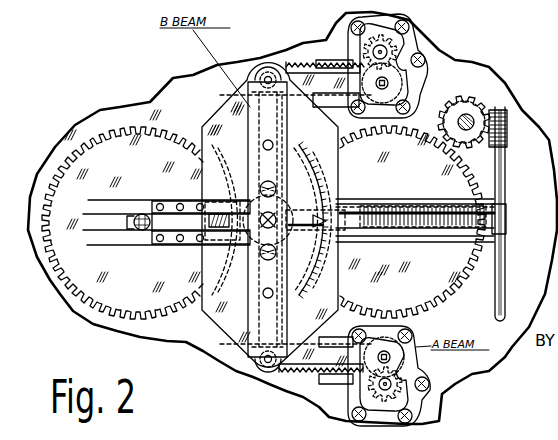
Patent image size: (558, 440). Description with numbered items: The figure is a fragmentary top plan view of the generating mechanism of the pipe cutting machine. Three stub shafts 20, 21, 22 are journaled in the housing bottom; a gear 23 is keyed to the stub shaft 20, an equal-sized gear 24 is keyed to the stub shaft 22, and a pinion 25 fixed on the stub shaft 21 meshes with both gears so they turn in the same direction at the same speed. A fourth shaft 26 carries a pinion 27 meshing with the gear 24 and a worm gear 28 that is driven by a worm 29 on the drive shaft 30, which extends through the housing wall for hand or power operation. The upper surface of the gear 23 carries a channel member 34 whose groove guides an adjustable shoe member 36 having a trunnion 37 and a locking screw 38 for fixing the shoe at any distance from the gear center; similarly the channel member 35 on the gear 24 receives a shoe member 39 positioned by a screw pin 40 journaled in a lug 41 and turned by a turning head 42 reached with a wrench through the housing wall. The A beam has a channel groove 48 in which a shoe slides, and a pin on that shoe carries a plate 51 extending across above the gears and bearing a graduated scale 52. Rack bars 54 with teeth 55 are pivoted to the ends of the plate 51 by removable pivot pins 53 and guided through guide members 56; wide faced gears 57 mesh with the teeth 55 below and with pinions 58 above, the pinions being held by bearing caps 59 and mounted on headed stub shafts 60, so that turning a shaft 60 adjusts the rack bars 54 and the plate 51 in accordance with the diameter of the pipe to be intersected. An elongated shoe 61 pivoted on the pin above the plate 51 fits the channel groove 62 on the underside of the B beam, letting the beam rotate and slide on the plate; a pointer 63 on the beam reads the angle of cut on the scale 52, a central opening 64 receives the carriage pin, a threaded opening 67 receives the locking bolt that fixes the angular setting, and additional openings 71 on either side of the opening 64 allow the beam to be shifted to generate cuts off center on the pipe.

The stub shaft 20 is at (138, 242).
The stub shaft 21 is at (225, 241).
The stub shaft 22 is at (395, 207).
The gear 23 is at (92, 147).
The gear 24 is at (405, 138).
The pinion 25 is at (293, 262).
The fourth shaft 26 is at (478, 112).
The pinion 27 is at (470, 114).
The worm gear 28 is at (484, 108).
The worm 29 is at (504, 110).
The drive shaft 30 is at (505, 243).
The channel member 34 is at (125, 209).
The channel member 35 is at (444, 200).
The shoe member 36 is at (258, 198).
The trunnion 37 is at (172, 228).
The locking screw 38 is at (142, 213).
The shoe member 39 is at (454, 238).
The screw pin 40 is at (422, 205).
The lug 41 is at (373, 200).
The turning head 42 is at (506, 219).
The channel groove 48 is at (343, 215).
The plate 51 is at (227, 122).
The graduated scale 52 is at (319, 190).
The pivot pin 53 is at (267, 68).
The rack bar 54 is at (296, 78).
The teeth 55 is at (311, 66).
The guide member 56 is at (336, 62).
The wide faced gear 57 is at (347, 33).
The pinion 58 is at (417, 76).
The bearing cap 59 is at (407, 45).
The stub shaft 60 is at (389, 85).
The elongated shoe 61 is at (285, 288).
The channel groove 62 is at (289, 119).
The pointer 63 is at (306, 214).
The opening 64 is at (226, 277).
The threaded opening 67 is at (274, 145).
The additional openings 71 is at (262, 184).